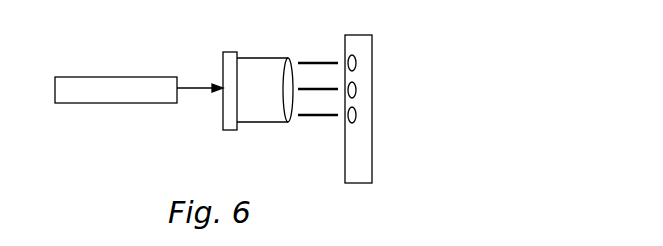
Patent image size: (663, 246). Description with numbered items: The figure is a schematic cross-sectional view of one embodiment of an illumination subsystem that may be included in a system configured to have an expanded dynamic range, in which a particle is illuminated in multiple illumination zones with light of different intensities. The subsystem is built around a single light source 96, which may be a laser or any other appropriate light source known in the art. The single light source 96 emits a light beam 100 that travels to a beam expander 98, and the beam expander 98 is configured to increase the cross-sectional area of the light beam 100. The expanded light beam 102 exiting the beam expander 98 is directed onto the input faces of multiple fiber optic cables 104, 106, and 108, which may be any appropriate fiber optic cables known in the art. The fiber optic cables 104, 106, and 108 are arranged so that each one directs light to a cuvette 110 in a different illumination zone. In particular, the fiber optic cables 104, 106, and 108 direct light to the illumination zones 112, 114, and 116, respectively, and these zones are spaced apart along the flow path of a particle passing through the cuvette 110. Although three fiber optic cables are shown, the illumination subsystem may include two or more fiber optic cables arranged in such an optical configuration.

The single light source 96 is at (108, 77).
The beam expander 98 is at (232, 52).
The light beam 100 is at (195, 88).
The light beam exiting the beam expander 102 is at (257, 110).
The fiber optic cable 104 is at (307, 63).
The fiber optic cable 106 is at (320, 89).
The fiber optic cable 108 is at (323, 115).
The cuvette 110 is at (365, 167).
The illumination zone 112 is at (355, 62).
The illumination zone 114 is at (355, 88).
The illumination zone 116 is at (355, 113).